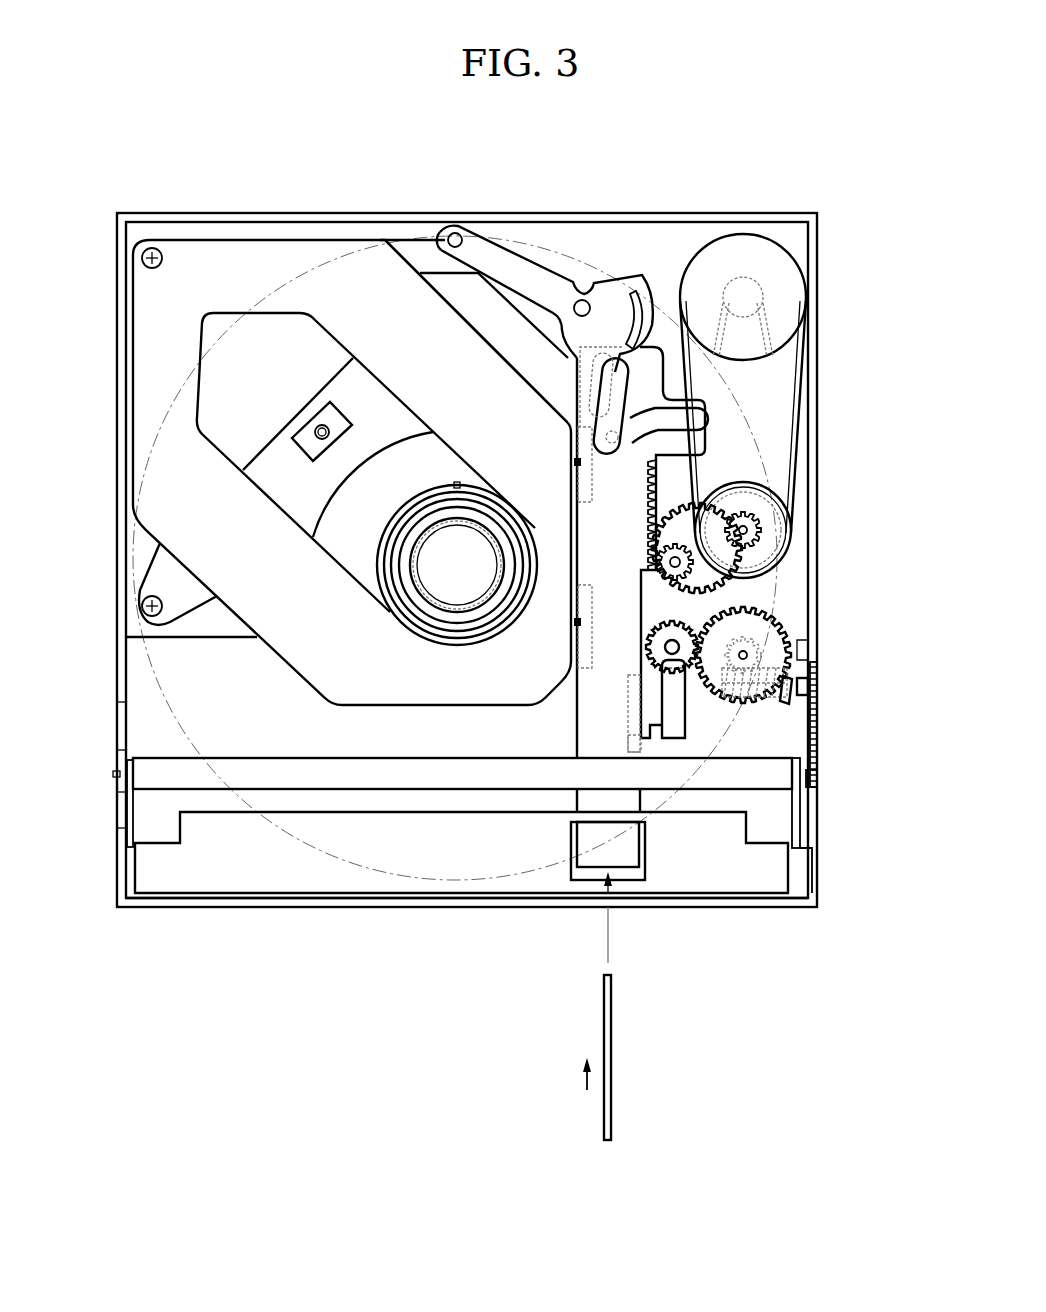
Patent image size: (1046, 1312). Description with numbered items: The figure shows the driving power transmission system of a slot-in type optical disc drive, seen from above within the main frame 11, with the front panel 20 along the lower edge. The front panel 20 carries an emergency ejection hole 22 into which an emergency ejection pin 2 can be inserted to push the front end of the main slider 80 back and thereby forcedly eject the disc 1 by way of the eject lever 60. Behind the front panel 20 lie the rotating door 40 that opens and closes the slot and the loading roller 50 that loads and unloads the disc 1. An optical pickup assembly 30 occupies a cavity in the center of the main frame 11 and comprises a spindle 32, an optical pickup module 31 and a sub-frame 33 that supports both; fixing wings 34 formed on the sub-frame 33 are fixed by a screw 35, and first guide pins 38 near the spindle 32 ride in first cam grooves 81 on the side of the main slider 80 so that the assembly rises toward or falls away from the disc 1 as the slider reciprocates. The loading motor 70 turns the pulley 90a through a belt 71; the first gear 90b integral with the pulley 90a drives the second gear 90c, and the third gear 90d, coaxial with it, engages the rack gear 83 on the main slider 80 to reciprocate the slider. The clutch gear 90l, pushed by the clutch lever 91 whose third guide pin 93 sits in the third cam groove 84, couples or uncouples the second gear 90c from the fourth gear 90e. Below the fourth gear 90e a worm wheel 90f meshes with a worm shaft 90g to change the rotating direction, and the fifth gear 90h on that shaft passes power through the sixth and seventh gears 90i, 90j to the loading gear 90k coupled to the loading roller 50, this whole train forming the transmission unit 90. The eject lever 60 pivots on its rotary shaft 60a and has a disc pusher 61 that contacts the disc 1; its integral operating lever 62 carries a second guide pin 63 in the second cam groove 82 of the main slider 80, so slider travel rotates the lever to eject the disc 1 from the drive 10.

The disc 1 is at (427, 257).
The emergency ejection pin 2 is at (612, 1090).
The optical disc drive apparatus 10 is at (266, 192).
The main frame 11 is at (337, 221).
The front panel 20 is at (668, 907).
The emergency ejection hole 22 is at (606, 907).
The optical pickup assembly 30 is at (255, 660).
The optical pickup module 31 is at (317, 425).
The spindle 32 is at (430, 540).
The sub-frame 33 is at (490, 347).
The fixing wings 34 is at (140, 575).
The screw 35 is at (153, 247).
The first guide pins 38 is at (583, 463).
The rotating door 40 is at (745, 893).
The loading roller 50 is at (305, 757).
The eject lever 60 is at (545, 271).
The rotary shaft 60a is at (582, 299).
The disc pusher 61 is at (455, 232).
The operating lever 62 is at (592, 386).
The second guide pin 63 is at (605, 438).
The loading motor 70 is at (745, 235).
The belt 71 is at (800, 392).
The main slider 80 is at (566, 721).
The first cam groove 81 is at (592, 495).
The second cam groove 82 is at (683, 412).
The rack gear 83 is at (657, 470).
The third cam groove 84 is at (630, 692).
The power transmission unit 90 is at (785, 636).
The pulley 90a is at (780, 520).
The first gear 90b is at (757, 535).
The second gear 90c is at (690, 565).
The third gear 90d is at (720, 580).
The fourth gear 90e is at (770, 640).
The worm wheel 90f is at (757, 655).
The worm shaft 90g is at (788, 692).
The fifth gear 90h is at (808, 685).
The sixth gear 90i is at (816, 722).
The seventh gear 90j is at (816, 745).
The loading gear 90k is at (840, 777).
The clutch gear 90l is at (690, 630).
The clutch lever 91 is at (682, 745).
The third guide pin 93 is at (628, 741).